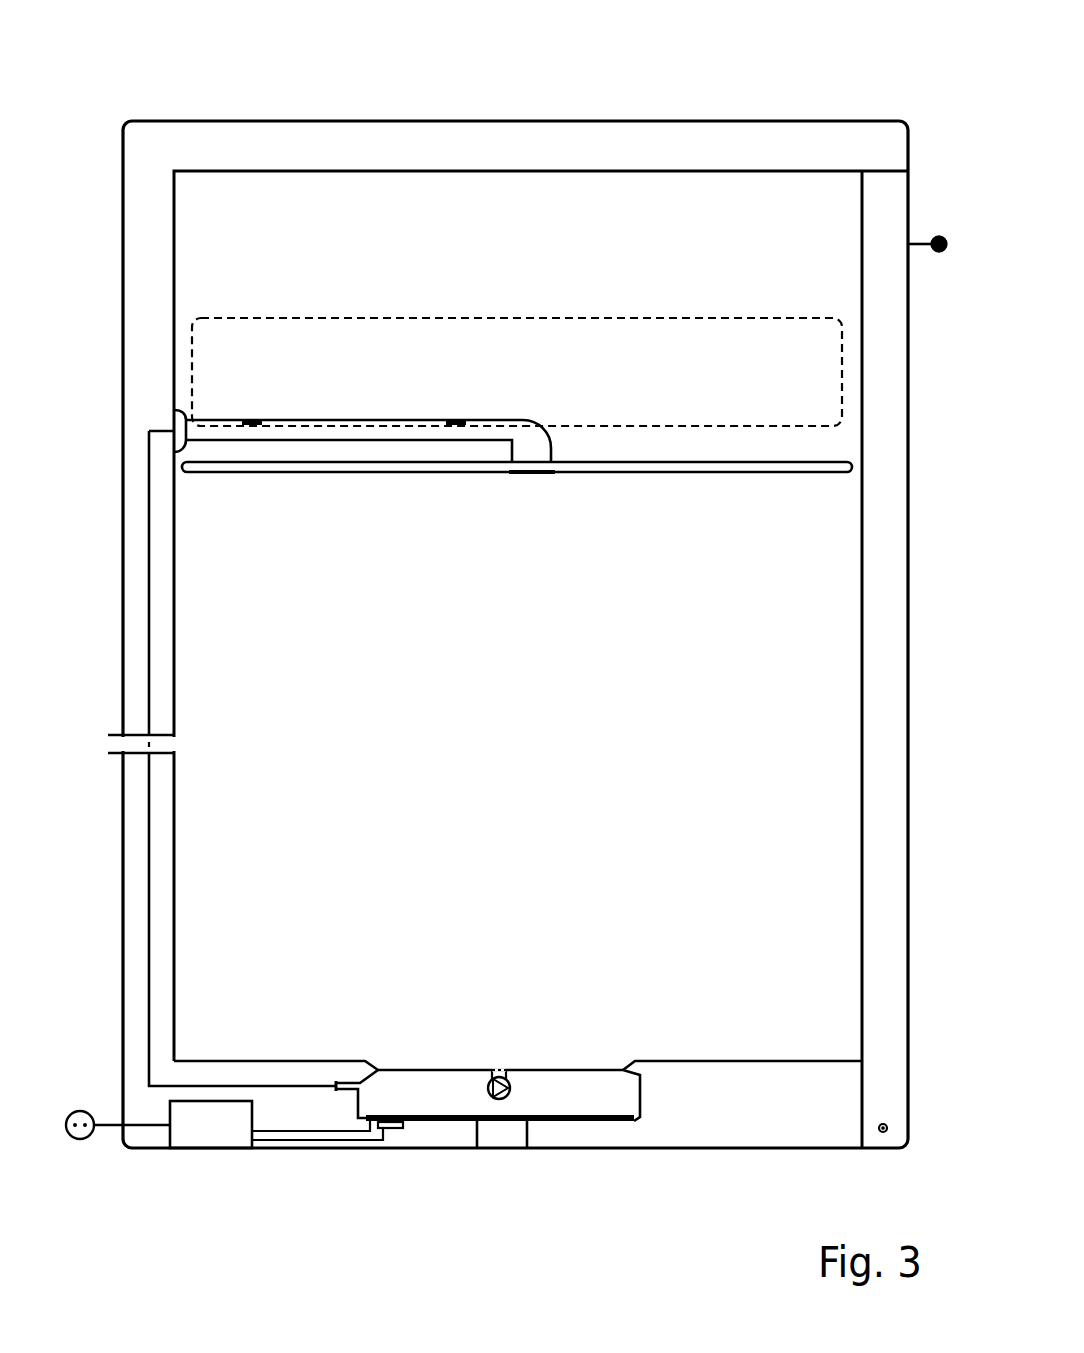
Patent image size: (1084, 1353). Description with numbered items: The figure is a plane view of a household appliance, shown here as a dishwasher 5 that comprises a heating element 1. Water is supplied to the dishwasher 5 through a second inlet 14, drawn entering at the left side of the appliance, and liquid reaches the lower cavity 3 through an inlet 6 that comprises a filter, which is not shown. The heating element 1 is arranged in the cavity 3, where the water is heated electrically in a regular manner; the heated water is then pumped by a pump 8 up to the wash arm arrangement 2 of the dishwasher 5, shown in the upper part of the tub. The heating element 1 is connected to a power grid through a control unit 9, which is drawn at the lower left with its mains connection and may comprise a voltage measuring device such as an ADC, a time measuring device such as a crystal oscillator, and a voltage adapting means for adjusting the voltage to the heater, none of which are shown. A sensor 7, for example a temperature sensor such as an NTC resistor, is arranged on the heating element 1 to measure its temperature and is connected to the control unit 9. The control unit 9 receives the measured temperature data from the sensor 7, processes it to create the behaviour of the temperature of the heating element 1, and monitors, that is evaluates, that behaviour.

The heating element 1 is at (565, 1122).
The wash arm arrangement 2 is at (534, 516).
The cavity 3 is at (652, 1095).
The dishwasher 5 is at (747, 131).
The inlet 6 is at (492, 1048).
The sensor 7 is at (397, 1128).
The pump 8 is at (511, 1088).
The control unit 9 is at (208, 1130).
The second inlet 14 is at (98, 748).